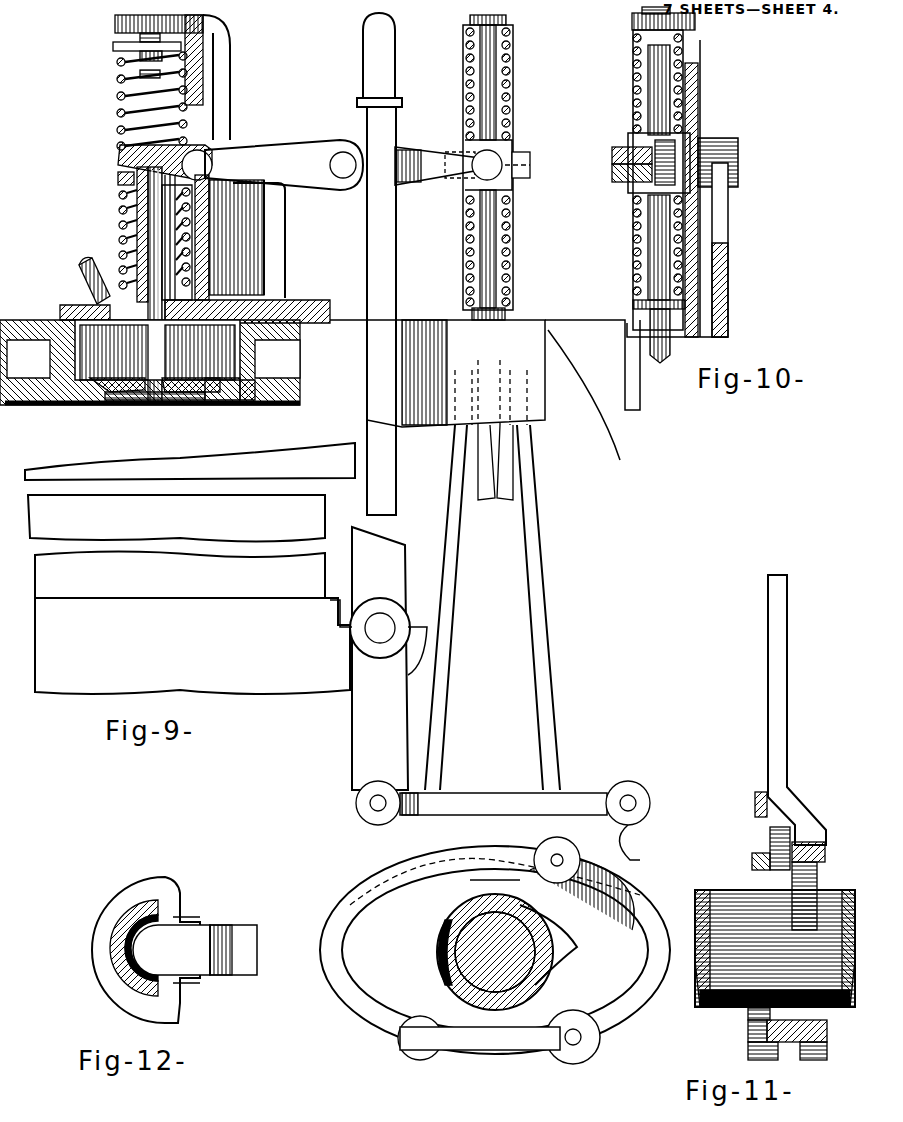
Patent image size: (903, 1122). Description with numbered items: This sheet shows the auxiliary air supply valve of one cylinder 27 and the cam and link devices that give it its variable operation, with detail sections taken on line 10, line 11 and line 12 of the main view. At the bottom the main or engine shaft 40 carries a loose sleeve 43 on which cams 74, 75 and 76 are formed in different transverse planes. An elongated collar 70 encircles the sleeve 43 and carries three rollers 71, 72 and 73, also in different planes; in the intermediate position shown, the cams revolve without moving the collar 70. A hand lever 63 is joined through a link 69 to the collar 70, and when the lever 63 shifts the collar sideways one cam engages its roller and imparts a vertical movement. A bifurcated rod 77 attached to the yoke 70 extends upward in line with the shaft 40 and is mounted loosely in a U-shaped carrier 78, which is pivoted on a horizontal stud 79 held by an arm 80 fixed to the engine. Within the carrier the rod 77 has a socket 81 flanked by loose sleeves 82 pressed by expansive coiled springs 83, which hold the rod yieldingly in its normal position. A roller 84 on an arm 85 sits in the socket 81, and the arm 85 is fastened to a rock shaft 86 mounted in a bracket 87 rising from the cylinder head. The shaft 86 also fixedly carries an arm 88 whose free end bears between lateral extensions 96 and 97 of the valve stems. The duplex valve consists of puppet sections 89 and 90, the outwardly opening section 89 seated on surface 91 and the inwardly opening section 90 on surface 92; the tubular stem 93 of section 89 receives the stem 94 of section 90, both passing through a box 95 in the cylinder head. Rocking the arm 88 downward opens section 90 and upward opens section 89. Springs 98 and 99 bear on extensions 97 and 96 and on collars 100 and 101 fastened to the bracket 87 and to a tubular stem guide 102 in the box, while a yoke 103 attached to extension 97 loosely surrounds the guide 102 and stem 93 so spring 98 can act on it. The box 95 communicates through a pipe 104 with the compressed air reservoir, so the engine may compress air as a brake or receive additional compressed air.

In FIG. 9, the section line 10— 10 is at (535, 315).
In FIG. 9, the section line 11— 11 is at (580, 1075).
In FIG. 9, the section line 12— 12 is at (120, 167).
In FIG. 9, the cylinder 27 is at (190, 557).
In FIG. 9, the main or engine shaft 40 is at (520, 970).
In FIG. 9, the sleeve 43 is at (522, 1005).
In FIG. 11, the sleeve 43 is at (722, 950).
In FIG. 9, the lever 63 is at (378, 658).
In FIG. 9, the link 69 is at (470, 808).
In FIG. 11, the link 69 is at (755, 800).
In FIG. 9, the elongated collar 70 is at (633, 892).
In FIG. 11, the elongated collar 70 is at (828, 1035).
In FIG. 9, the roller 71 is at (557, 870).
In FIG. 11, the roller 71 is at (770, 835).
In FIG. 9, the roller 72 is at (570, 1030).
In FIG. 11, the roller 72 is at (765, 1062).
In FIG. 9, the roller 73 is at (420, 1055).
In FIG. 11, the roller 73 is at (827, 1052).
In FIG. 9, the cam 74 is at (482, 880).
In FIG. 11, the cam 74 is at (780, 905).
In FIG. 9, the cam 75 is at (565, 940).
In FIG. 11, the cam 75 is at (835, 852).
In FIG. 9, the cam 76 is at (500, 1005).
In FIG. 11, the cam 76 is at (748, 1013).
In FIG. 9, the bifurcated rod 77 is at (448, 690).
In FIG. 10, the bifurcated rod 77 is at (665, 33).
In FIG. 11, the bifurcated rod 77 is at (778, 678).
In FIG. 9, the U-shaped carrier 78 is at (512, 22).
In FIG. 10, the U-shaped carrier 78 is at (700, 95).
In FIG. 10, the horizontal stud 79 is at (718, 140).
In FIG. 10, the arm 80 is at (722, 217).
In FIG. 9, the socket 81 is at (505, 140).
In FIG. 10, the socket 81 is at (632, 185).
In FIG. 9, the sleeve 82 is at (497, 88).
In FIG. 10, the sleeve 82 is at (650, 90).
In FIG. 9, the expansive coiled spring 83 is at (511, 65).
In FIG. 10, the expansive coiled spring 83 is at (633, 60).
In FIG. 9, the roller 84 is at (480, 172).
In FIG. 10, the roller 84 is at (612, 153).
In FIG. 9, the arm 85 is at (420, 155).
In FIG. 10, the arm 85 is at (612, 175).
In FIG. 9, the rock shaft 86 is at (343, 172).
In FIG. 9, the bracket 87 is at (247, 249).
In FIG. 9, the arm 88 is at (296, 142).
In FIG. 9, the puppet valve section 89 is at (108, 402).
In FIG. 9, the puppet valve section 90 is at (155, 405).
In FIG. 9, the seat surface 91 is at (218, 400).
In FIG. 9, the seat surface 92 is at (245, 400).
In FIG. 9, the tubular stem 93 is at (185, 395).
In FIG. 12, the tubular stem 93 is at (122, 985).
In FIG. 9, the stem 94 is at (125, 400).
In FIG. 12, the stem 94 is at (171, 950).
In FIG. 9, the box 95 is at (60, 310).
In FIG. 9, the lateral extension 96 is at (205, 147).
In FIG. 9, the lateral extension 97 is at (212, 175).
In FIG. 12, the lateral extension 97 is at (232, 930).
In FIG. 9, the spring 98 is at (120, 207).
In FIG. 9, the spring 99 is at (118, 112).
In FIG. 9, the collar 100 is at (120, 48).
In FIG. 9, the collar 101 is at (120, 282).
In FIG. 9, the tubular stem guide 102 is at (137, 226).
In FIG. 12, the tubular stem guide 102 is at (118, 960).
In FIG. 9, the yoke 103 is at (118, 178).
In FIG. 12, the yoke 103 is at (95, 940).
In FIG. 9, the pipe 104 is at (78, 268).